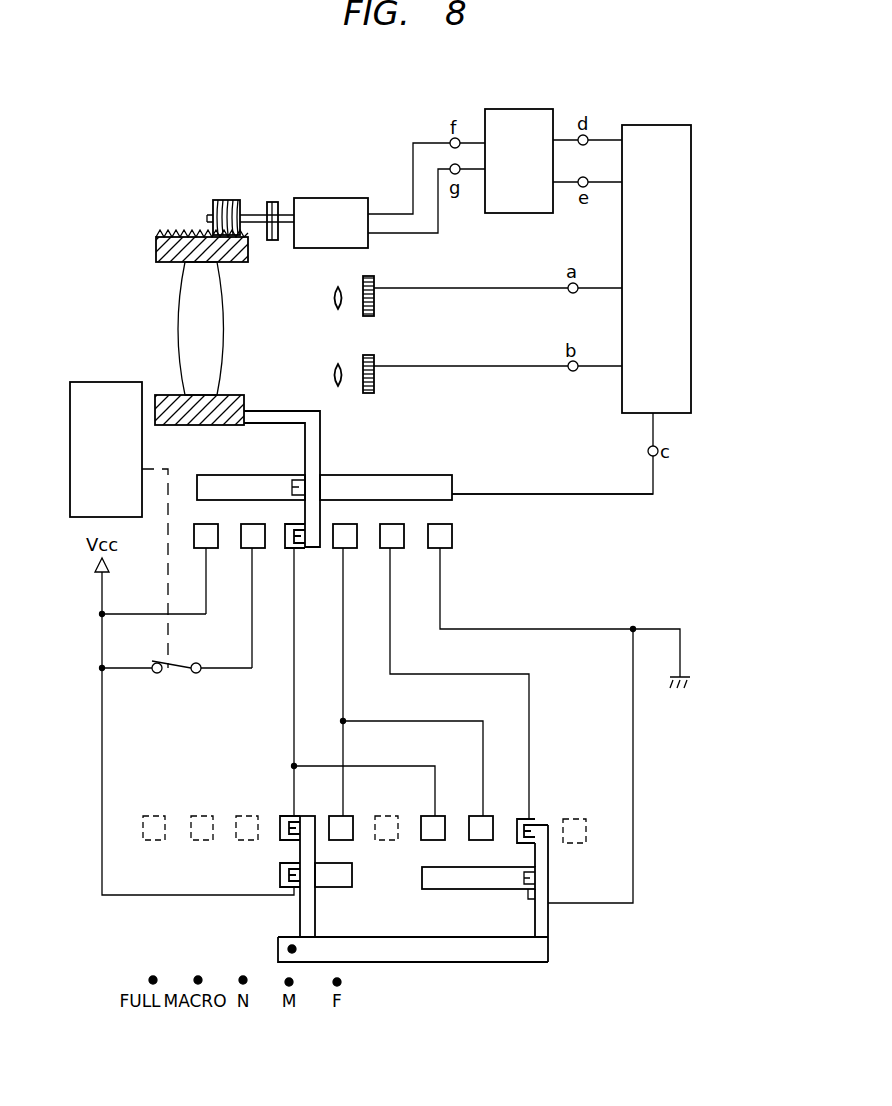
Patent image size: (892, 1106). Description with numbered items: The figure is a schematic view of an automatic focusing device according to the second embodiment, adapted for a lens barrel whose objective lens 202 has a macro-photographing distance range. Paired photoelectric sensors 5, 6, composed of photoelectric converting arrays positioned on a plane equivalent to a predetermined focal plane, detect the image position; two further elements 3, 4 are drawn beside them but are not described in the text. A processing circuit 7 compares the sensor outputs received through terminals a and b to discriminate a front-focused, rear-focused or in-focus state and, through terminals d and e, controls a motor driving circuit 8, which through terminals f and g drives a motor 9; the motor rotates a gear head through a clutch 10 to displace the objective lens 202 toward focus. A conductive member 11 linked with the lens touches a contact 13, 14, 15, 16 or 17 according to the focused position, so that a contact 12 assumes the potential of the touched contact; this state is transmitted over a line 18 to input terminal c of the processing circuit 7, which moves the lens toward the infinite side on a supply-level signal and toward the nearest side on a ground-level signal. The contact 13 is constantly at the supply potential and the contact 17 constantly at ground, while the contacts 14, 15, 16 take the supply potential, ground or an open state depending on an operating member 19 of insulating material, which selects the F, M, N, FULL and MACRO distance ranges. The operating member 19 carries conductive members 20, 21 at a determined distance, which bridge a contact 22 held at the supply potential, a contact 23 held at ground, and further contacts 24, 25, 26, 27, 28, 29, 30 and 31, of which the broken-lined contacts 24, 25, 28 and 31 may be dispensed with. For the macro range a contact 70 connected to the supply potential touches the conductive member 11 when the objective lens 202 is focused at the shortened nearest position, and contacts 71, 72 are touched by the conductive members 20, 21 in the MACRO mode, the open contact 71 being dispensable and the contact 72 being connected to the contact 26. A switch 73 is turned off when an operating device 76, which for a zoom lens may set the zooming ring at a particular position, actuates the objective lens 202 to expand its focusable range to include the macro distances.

The light receiving lens 3 is at (331, 294).
The light receiving lens 4 is at (331, 371).
The photoelectric sensor 5 is at (376, 280).
The photoelectric sensor 6 is at (376, 358).
The processing circuit 7 is at (691, 152).
The motor driving circuit 8 is at (518, 109).
The motor 9 is at (330, 198).
The clutch 10 is at (272, 200).
The conductive member 11 is at (322, 449).
The contact 12 is at (418, 475).
The contact 13 is at (244, 552).
The contact 14 is at (288, 552).
The contact 15 is at (336, 552).
The contact 16 is at (383, 552).
The contact 17 is at (432, 552).
The line 18 is at (558, 496).
The operating member 19 is at (540, 950).
The conductive member 20 is at (315, 910).
The conductive member 21 is at (545, 918).
The contact 22 is at (352, 875).
The contact 23 is at (445, 889).
The contact 24 is at (149, 815).
The contact 25 is at (240, 815).
The contact 26 is at (297, 816).
The contact 27 is at (349, 816).
The contact 28 is at (384, 816).
The contact 29 is at (489, 816).
The contact 30 is at (543, 808).
The contact 31 is at (569, 816).
The contact 70 is at (197, 552).
The contact 71 is at (194, 815).
The contact 72 is at (440, 816).
The switch 73 is at (177, 676).
The operating device 76 is at (110, 381).
The objective lens 202 is at (182, 318).